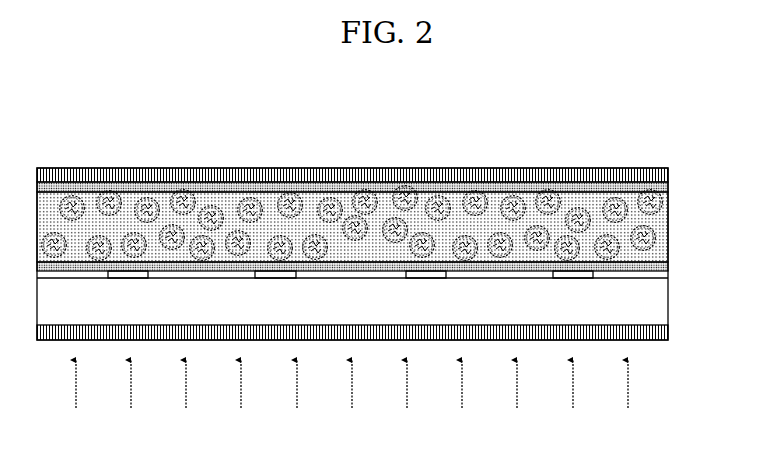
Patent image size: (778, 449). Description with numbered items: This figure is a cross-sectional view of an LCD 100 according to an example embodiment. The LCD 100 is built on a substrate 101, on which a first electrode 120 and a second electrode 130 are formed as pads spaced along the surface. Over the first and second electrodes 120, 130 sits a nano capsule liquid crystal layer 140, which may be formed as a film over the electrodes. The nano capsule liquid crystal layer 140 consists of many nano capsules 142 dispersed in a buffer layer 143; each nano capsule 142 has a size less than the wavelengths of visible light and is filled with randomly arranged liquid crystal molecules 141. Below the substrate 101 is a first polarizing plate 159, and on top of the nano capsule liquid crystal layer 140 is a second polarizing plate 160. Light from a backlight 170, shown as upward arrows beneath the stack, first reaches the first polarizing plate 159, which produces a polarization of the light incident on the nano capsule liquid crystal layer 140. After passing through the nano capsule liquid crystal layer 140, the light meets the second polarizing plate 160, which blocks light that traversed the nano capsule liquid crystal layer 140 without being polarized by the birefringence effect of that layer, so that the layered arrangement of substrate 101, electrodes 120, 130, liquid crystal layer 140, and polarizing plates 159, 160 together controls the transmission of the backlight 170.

The LCD 100 is at (391, 210).
The substrate 101 is at (635, 314).
The first electrode 120 is at (127, 279).
The second electrode 130 is at (277, 279).
The nano capsule liquid crystal layer 140 is at (391, 226).
The liquid crystal molecules 141 is at (668, 192).
The nano capsule 142 is at (668, 208).
The buffer layer 143 is at (668, 223).
The first polarizing plate 159 is at (668, 332).
The second polarizing plate 160 is at (668, 173).
The backlight 170 is at (352, 396).